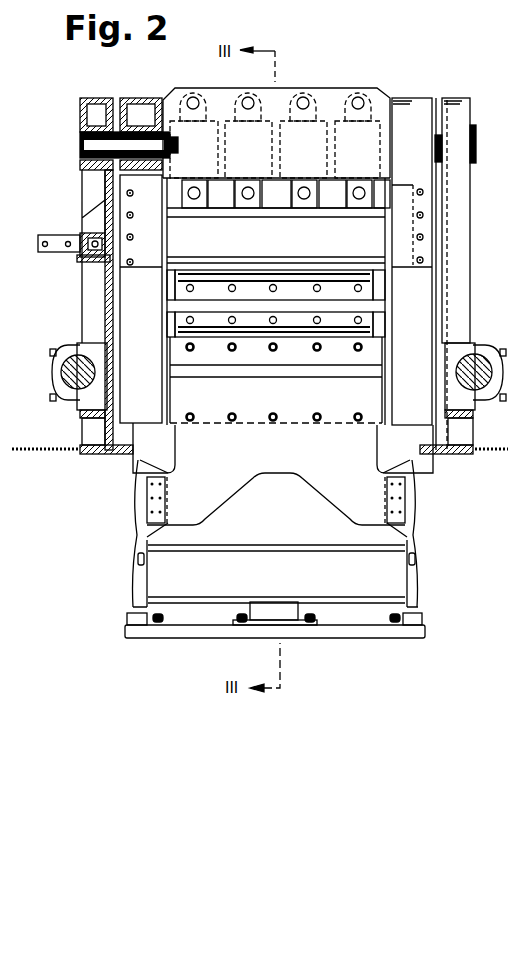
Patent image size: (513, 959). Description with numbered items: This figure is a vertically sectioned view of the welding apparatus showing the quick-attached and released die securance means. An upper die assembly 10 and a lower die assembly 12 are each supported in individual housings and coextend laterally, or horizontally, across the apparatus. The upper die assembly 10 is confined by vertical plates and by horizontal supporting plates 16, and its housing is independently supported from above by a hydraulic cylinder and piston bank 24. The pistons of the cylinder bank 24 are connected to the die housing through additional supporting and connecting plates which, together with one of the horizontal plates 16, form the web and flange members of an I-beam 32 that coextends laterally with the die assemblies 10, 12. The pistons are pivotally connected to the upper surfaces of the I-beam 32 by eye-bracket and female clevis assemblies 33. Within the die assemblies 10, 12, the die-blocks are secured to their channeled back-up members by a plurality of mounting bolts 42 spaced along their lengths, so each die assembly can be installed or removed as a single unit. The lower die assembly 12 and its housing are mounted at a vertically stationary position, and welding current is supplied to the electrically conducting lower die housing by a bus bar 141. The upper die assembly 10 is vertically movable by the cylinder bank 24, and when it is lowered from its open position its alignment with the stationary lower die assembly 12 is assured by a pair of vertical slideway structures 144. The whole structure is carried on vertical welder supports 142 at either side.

The upper die assembly 10 is at (367, 292).
The lower die assembly 12 is at (368, 326).
The horizontal supporting plate 16 is at (377, 263).
The hydraulic cylinder and piston bank 24 is at (322, 126).
The I-beam 32 is at (373, 243).
The eye-bracket and female clevis assembly 33 is at (360, 186).
The mounting bolt 42 is at (233, 284).
The bus bar 141 is at (322, 480).
The vertical welder support 142 is at (107, 197).
The vertical slideway structure 144 is at (135, 226).